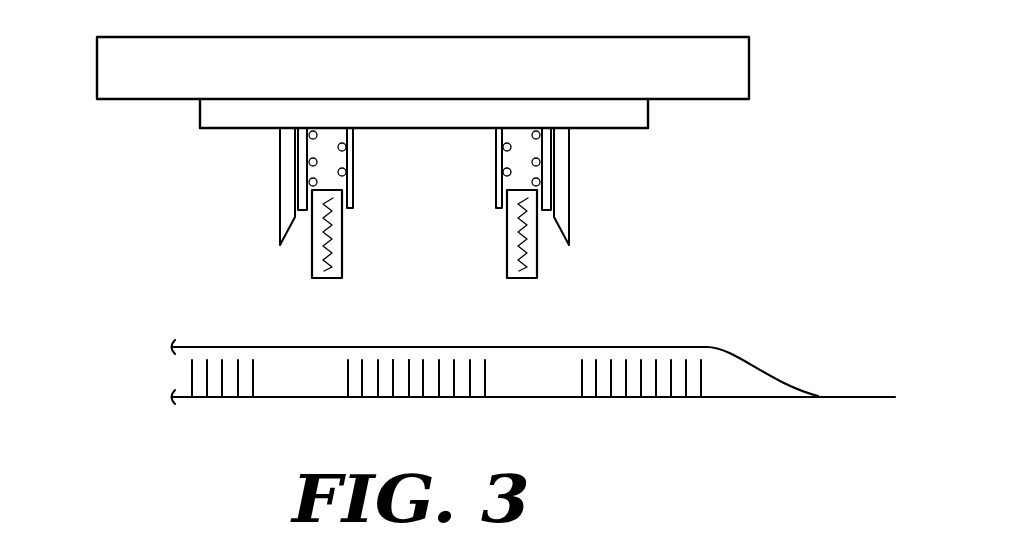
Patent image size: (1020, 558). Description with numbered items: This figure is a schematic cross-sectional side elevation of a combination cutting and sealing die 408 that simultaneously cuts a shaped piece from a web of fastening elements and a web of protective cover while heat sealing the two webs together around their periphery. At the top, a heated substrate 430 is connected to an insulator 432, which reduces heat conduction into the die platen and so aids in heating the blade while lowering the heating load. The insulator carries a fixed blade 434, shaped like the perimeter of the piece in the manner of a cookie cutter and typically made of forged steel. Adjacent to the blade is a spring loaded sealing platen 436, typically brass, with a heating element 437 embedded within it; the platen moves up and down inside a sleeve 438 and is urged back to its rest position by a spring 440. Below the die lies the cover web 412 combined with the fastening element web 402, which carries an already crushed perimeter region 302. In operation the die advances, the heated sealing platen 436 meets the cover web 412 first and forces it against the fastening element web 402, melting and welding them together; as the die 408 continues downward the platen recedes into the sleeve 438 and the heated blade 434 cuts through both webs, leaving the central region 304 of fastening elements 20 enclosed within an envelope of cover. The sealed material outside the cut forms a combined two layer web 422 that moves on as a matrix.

The fastening elements 20 is at (581, 372).
The crushed perimeter region 302 is at (273, 380).
The central region 304 is at (400, 378).
The fastening element web 402 is at (650, 397).
The combination cutting and sealing die 408 is at (86, 68).
The cover web 412 is at (228, 347).
The combined two layer web 422 is at (826, 393).
The heated substrate 430 is at (368, 48).
The insulator 432 is at (640, 113).
The fixed blade 434 is at (285, 178).
The spring loaded sealing platen 436 is at (342, 265).
The heating element 437 is at (322, 262).
The sleeve 438 is at (348, 158).
The spring 440 is at (300, 134).